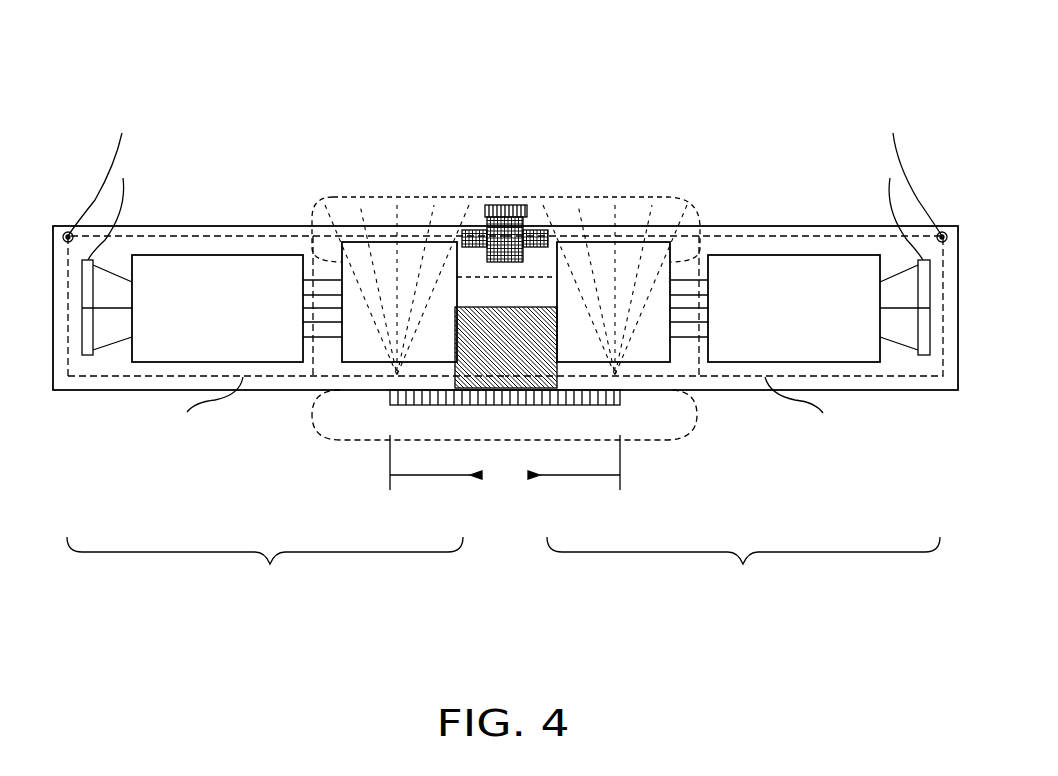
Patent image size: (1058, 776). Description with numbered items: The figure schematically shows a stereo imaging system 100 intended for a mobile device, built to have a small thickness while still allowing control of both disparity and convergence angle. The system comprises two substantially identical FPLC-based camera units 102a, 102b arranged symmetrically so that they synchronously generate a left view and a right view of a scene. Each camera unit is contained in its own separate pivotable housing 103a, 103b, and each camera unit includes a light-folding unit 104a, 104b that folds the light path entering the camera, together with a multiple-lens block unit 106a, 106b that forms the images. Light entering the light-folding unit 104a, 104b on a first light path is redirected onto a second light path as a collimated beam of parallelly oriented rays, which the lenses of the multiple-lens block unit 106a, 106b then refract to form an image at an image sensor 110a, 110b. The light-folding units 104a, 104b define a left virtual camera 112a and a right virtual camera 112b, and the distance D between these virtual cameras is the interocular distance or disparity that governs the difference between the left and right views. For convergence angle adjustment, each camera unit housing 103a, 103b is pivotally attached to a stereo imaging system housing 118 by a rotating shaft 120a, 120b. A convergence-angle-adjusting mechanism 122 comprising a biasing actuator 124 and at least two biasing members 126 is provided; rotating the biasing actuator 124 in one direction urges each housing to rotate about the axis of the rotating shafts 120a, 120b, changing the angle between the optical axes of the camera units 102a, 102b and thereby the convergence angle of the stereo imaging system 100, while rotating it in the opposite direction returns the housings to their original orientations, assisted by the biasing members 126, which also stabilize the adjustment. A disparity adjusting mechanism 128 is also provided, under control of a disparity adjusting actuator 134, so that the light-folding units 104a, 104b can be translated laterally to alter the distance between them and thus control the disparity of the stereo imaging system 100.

The stereo imaging system 100 is at (148, 48).
The FPLC-based camera unit 102a is at (265, 579).
The FPLC-based camera unit 102b is at (743, 579).
The pivotable housing 103a is at (280, 377).
The pivotable housing 103b is at (727, 377).
The light-folding unit 104a is at (342, 262).
The light-folding unit 104b is at (670, 262).
The multiple-lens block unit 106a is at (295, 256).
The multiple-lens block unit 106b is at (716, 256).
The image sensor 110a is at (70, 377).
The image sensor 110b is at (933, 390).
The left virtual camera 112a is at (350, 378).
The right virtual camera 112b is at (665, 378).
The stereo imaging system housing 118 is at (54, 365).
The rotating shaft 120a is at (68, 236).
The rotating shaft 120b is at (942, 236).
The convergence-angle-adjusting mechanism 122 is at (504, 97).
The biasing actuator 124 is at (487, 216).
The biasing member 126 is at (470, 230).
The disparity adjusting mechanism 128 is at (500, 407).
The disparity adjusting actuator 134 is at (512, 407).